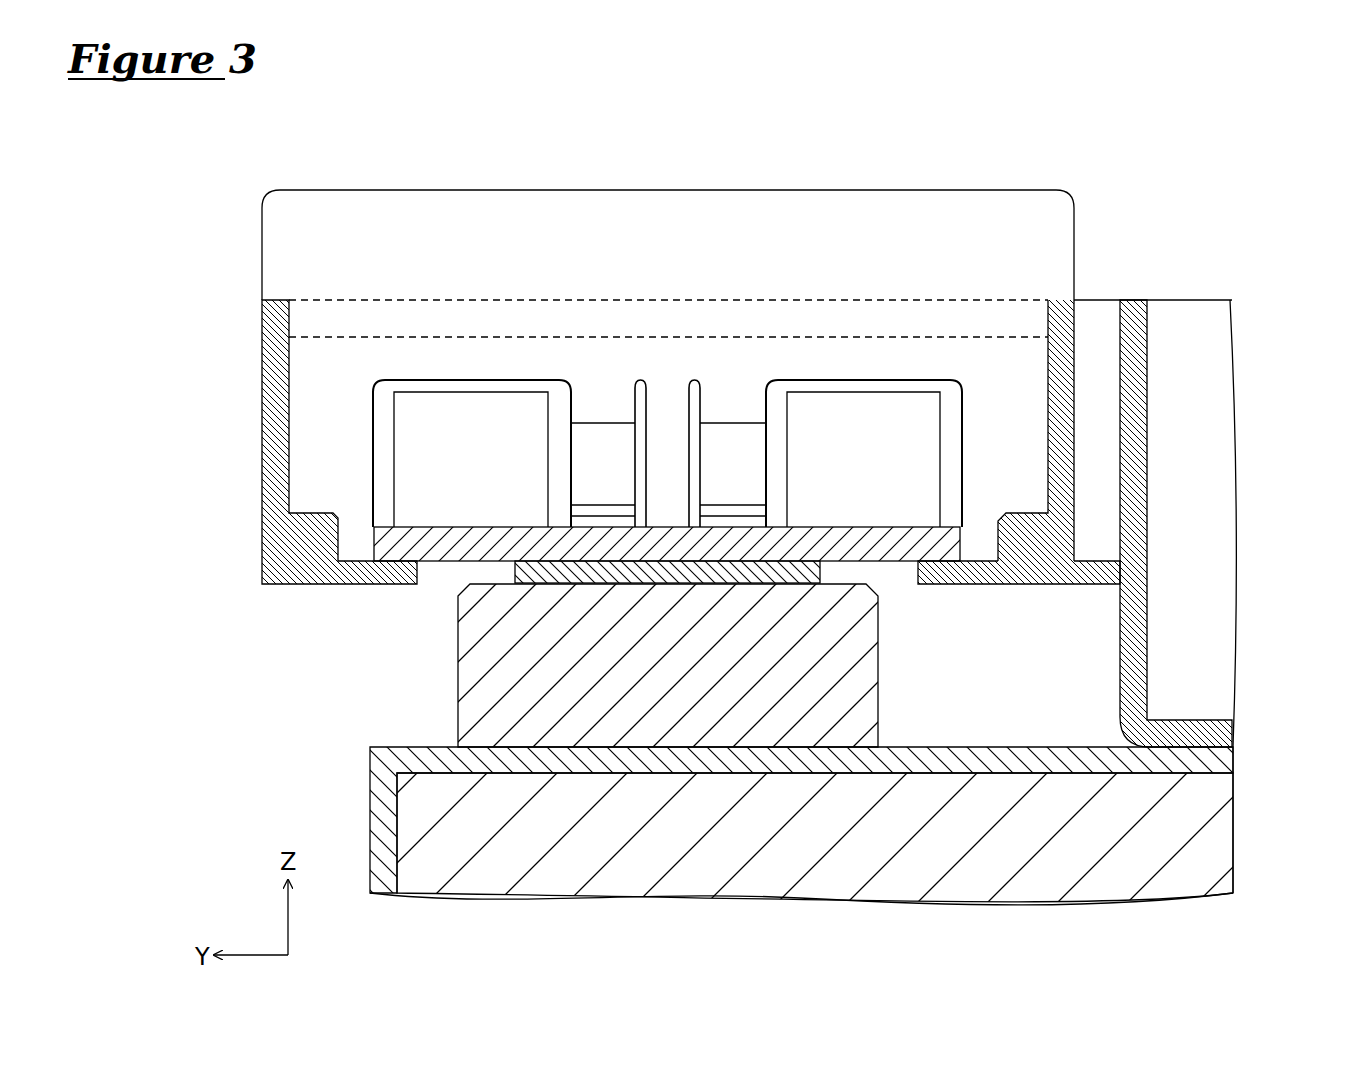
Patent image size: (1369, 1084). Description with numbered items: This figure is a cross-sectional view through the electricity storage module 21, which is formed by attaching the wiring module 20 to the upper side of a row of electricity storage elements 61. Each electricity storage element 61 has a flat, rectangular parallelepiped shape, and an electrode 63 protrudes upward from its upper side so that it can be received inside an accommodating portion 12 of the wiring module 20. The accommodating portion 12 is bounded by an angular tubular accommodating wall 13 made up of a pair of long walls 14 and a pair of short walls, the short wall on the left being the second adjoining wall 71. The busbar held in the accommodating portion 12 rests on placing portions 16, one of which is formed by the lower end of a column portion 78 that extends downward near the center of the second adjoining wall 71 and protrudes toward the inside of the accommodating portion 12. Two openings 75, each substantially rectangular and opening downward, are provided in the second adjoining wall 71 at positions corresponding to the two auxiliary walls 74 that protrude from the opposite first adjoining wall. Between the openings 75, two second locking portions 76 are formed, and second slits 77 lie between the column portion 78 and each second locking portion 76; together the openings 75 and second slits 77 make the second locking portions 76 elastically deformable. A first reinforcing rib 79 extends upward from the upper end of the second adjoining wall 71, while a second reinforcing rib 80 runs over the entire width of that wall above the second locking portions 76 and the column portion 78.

The accommodating portion 12 is at (288, 362).
The accommodating wall 13 is at (268, 383).
The long wall 14 is at (268, 433).
The placing portion 16 is at (395, 585).
The wiring module 20 is at (1024, 225).
The electricity storage module 21 is at (1298, 148).
The electricity storage element 61 is at (407, 827).
The electrode 63 is at (592, 582).
The second adjoining wall 71 is at (340, 382).
The auxiliary wall 74 is at (446, 415).
The opening 75 is at (479, 402).
The second locking portion 76 is at (600, 467).
The second slit 77 is at (640, 382).
The column portion 78 is at (668, 430).
The first reinforcing rib 79 is at (352, 212).
The second reinforcing rib 80 is at (1015, 312).